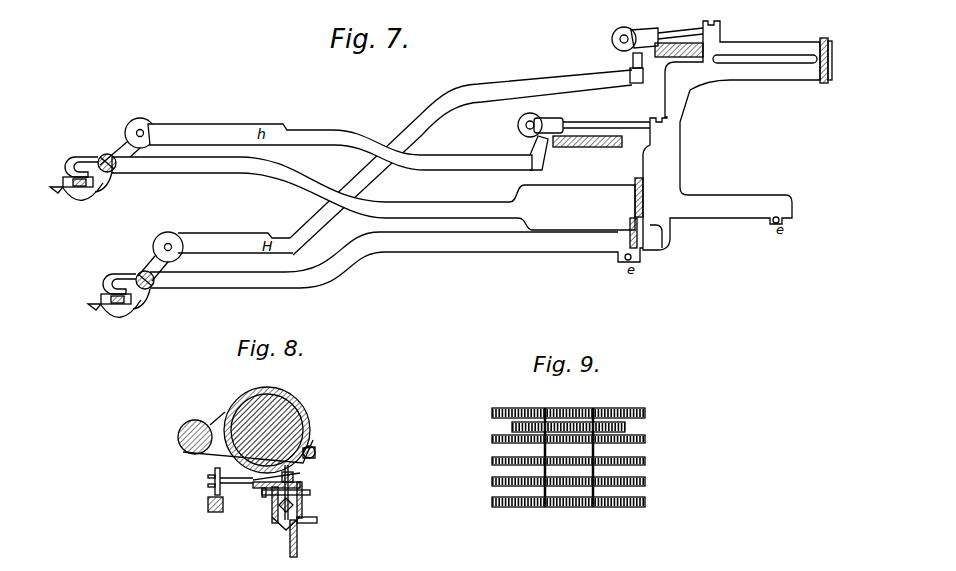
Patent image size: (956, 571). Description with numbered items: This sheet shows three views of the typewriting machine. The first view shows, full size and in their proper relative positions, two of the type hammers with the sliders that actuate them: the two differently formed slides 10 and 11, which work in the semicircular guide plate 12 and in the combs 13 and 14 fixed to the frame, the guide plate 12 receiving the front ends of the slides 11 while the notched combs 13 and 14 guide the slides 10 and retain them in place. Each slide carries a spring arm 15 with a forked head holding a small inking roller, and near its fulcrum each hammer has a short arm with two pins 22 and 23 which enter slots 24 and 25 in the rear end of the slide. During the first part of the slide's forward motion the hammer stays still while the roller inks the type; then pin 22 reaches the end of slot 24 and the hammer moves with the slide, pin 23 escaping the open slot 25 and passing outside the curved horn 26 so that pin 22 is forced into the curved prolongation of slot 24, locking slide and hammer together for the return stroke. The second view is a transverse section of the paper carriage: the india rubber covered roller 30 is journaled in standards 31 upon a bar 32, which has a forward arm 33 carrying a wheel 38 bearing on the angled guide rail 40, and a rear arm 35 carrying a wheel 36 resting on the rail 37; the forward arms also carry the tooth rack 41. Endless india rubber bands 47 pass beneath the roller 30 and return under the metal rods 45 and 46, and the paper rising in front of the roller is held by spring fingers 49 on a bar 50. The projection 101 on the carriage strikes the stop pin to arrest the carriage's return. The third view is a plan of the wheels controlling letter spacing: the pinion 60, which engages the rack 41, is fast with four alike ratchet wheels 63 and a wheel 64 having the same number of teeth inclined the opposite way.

In FIG. 7, the slides 10 is at (420, 192).
In FIG. 7, the slides 11 is at (483, 169).
In FIG. 7, the semicircular guide plate 12 is at (820, 38).
In FIG. 7, the comb 13 is at (670, 238).
In FIG. 7, the guide comb 14 is at (643, 196).
In FIG. 7, the spring arm 15 is at (690, 27).
In FIG. 7, the pin 22 is at (113, 171).
In FIG. 7, the pin 23 is at (100, 192).
In FIG. 7, the slot 24 is at (82, 157).
In FIG. 7, the slot 25 is at (58, 193).
In FIG. 7, the curved horn 26 is at (82, 200).
In FIG. 8, the india rubber covered roller 30 is at (267, 430).
In FIG. 8, the standards 31 is at (295, 468).
In FIG. 8, the bar 32 is at (258, 490).
In FIG. 8, the arm 33 is at (310, 493).
In FIG. 8, the arm 35 is at (236, 489).
In FIG. 8, the wheel 36 is at (213, 476).
In FIG. 8, the bar or rail 37 is at (213, 514).
In FIG. 8, the wheel 38 is at (302, 505).
In FIG. 8, the guide rail 40 is at (280, 527).
In FIG. 8, the tooth rack 41 is at (297, 548).
In FIG. 8, the metal rod 45 is at (315, 455).
In FIG. 8, the metal rod 46 is at (300, 478).
In FIG. 8, the endless india rubber bands 47 is at (183, 450).
In FIG. 8, the spring fingers 49 is at (305, 412).
In FIG. 8, the bar 50 is at (315, 447).
In FIG. 8, the projection 101 is at (305, 523).
In FIG. 9, the pinion 60 is at (625, 428).
In FIG. 9, the ratchet wheels 63 is at (492, 440).
In FIG. 9, the ratchet wheel 64 is at (568, 405).